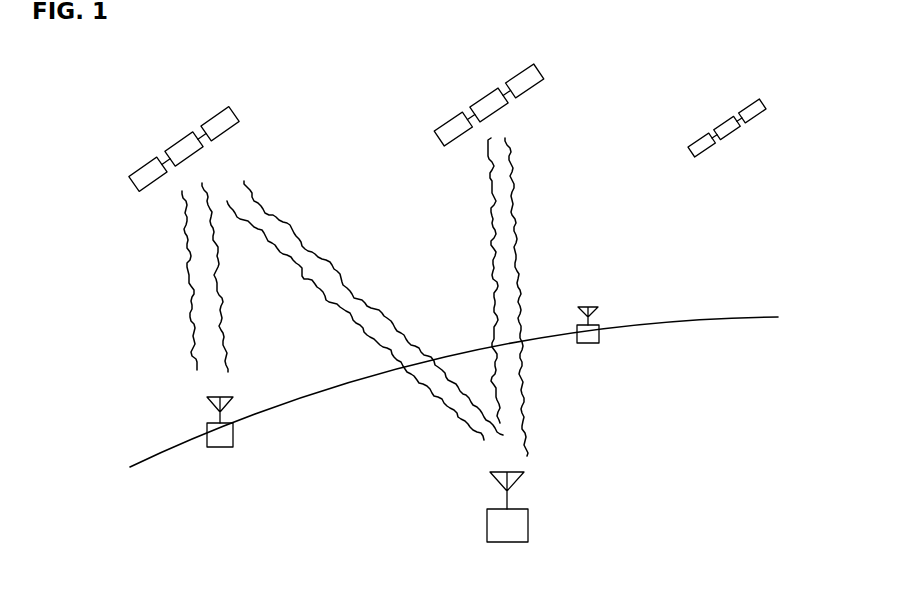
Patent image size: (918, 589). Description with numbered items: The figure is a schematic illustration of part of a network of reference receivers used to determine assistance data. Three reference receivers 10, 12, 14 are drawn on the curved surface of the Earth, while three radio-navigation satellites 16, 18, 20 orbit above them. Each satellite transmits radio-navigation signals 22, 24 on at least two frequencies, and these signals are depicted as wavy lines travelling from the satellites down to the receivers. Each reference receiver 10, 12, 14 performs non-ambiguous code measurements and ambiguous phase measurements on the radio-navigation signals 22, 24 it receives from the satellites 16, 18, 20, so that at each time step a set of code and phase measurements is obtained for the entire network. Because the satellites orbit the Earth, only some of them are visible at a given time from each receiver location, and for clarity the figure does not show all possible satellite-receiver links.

The reference receiver 10 is at (233, 437).
The reference receiver 12 is at (528, 517).
The reference receiver 14 is at (586, 343).
The radio-navigation satellite 16 is at (238, 113).
The radio-navigation satellite 18 is at (527, 90).
The radio-navigation satellite 20 is at (700, 153).
The radio-navigation signal 22 is at (355, 320).
The radio-navigation signal 24 is at (330, 263).